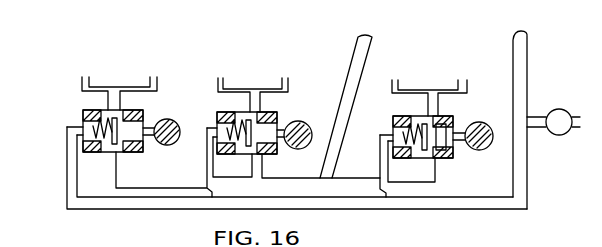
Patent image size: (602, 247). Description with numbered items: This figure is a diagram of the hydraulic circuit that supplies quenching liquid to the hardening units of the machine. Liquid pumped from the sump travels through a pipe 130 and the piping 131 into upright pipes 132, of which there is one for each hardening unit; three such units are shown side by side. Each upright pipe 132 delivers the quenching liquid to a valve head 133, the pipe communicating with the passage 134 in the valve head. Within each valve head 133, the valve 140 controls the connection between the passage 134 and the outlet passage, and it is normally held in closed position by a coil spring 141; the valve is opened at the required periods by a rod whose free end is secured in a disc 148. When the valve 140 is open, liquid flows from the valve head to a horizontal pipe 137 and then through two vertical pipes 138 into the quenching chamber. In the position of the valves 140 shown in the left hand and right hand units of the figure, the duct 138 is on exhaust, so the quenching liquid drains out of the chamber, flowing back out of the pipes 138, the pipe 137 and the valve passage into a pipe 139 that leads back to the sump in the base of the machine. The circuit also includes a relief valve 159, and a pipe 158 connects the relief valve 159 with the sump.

The pipe 130 is at (357, 63).
The piping 131 is at (292, 180).
The upright pipe 132 is at (120, 169).
The valve head 133 is at (135, 112).
The passage 134 is at (440, 127).
The horizontal pipe 137 is at (95, 93).
The vertical pipe 138 is at (153, 73).
The pipe 139 is at (67, 178).
The valve 140 is at (116, 150).
The coil spring 141 is at (90, 127).
The disc 148 is at (174, 140).
The pipe 158 is at (513, 46).
The relief valve 159 is at (557, 130).